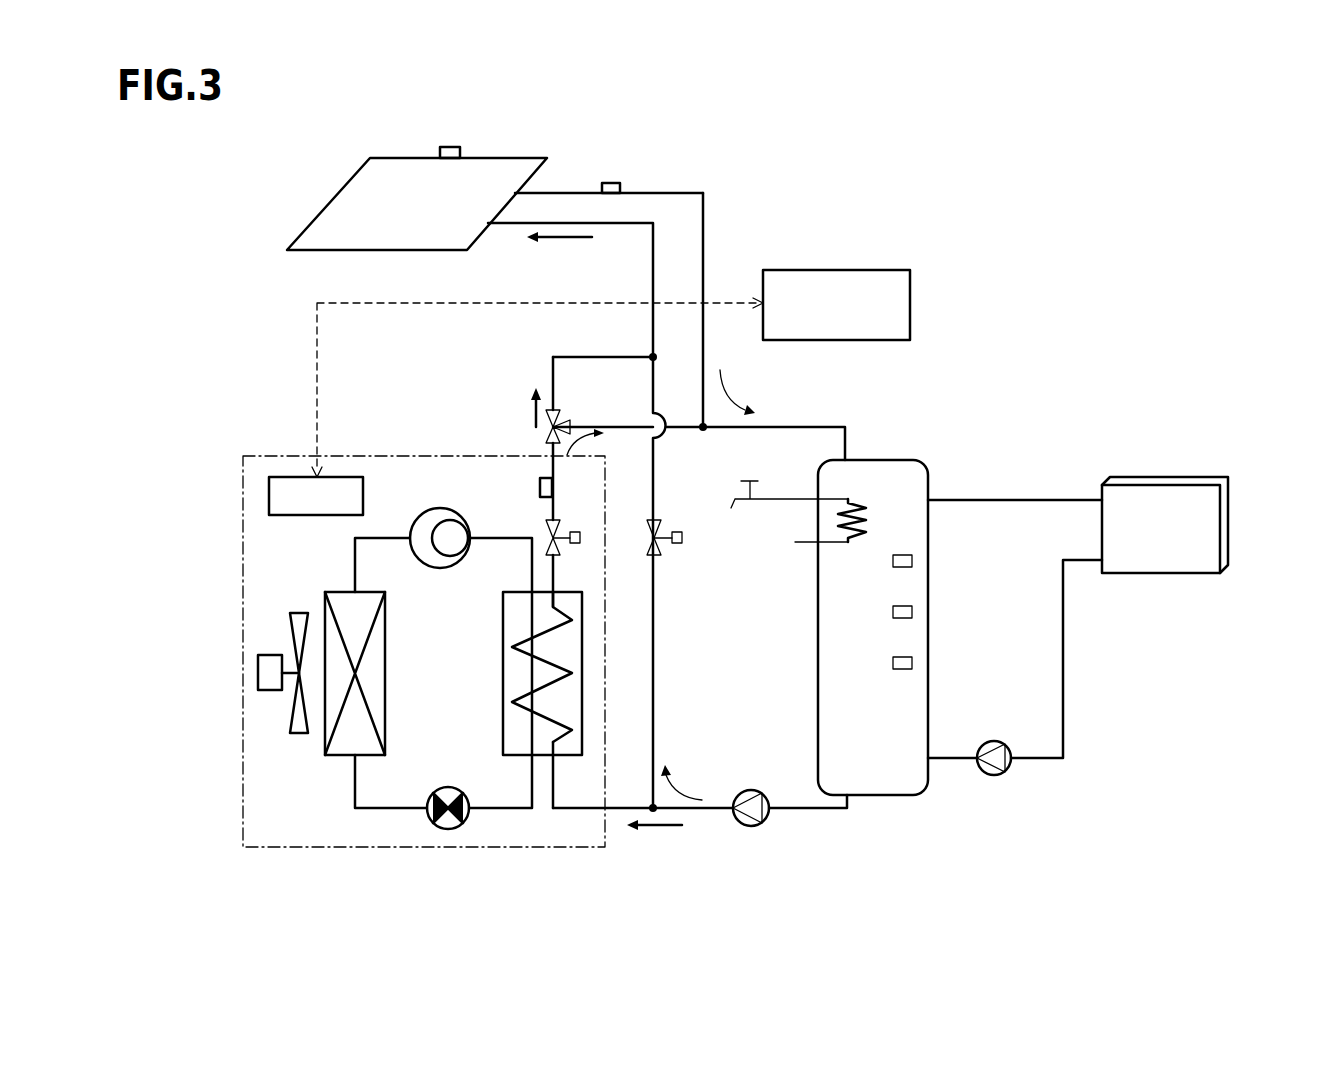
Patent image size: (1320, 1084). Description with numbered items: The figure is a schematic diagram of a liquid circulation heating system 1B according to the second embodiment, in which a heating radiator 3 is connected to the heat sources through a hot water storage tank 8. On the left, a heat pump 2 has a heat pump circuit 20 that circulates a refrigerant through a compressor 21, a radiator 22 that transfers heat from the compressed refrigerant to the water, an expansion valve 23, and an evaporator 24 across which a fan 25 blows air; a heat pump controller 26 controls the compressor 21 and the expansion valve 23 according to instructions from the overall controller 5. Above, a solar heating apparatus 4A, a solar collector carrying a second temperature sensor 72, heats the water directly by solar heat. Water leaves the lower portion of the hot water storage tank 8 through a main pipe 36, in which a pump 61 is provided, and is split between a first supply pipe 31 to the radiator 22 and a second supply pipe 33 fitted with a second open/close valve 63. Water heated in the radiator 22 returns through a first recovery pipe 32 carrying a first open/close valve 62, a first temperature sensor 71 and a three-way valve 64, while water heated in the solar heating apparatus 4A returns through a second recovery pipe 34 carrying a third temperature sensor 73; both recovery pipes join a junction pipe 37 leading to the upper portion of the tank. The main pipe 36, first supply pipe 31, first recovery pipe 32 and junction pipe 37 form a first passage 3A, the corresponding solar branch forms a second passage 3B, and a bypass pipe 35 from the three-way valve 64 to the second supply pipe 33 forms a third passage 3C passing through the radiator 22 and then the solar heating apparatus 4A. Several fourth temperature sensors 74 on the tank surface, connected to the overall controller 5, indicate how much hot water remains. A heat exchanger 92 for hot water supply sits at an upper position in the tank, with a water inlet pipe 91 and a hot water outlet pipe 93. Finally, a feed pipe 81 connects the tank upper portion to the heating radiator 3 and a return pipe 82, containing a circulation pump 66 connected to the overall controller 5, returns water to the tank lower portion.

The liquid circulation heating system 1B is at (1050, 220).
The heat pump 2 is at (240, 557).
The heating radiator 3 is at (1200, 507).
The first passage 3A is at (577, 812).
The second passage 3B is at (674, 190).
The third passage 3C is at (602, 353).
The solar heating apparatus 4A is at (352, 202).
The overall controller 5 is at (865, 283).
The hot water storage tank 8 is at (908, 695).
The heat pump circuit 20 is at (500, 812).
The compressor 21 is at (435, 508).
The radiator 22 is at (502, 655).
The expansion valve 23 is at (450, 832).
The evaporator 24 is at (340, 757).
The fan 25 is at (273, 658).
The heat pump controller 26 is at (285, 477).
The first supply pipe 31 is at (618, 810).
The first recovery pipe 32 is at (682, 430).
The second supply pipe 33 is at (657, 727).
The second recovery pipe 34 is at (703, 222).
The bypass pipe 35 is at (572, 357).
The main pipe 36 is at (813, 810).
The junction pipe 37 is at (812, 427).
The pump 61 is at (752, 827).
The first open/close valve 62 is at (560, 550).
The second open/close valve 63 is at (662, 548).
The three-way valve 64 is at (550, 437).
The circulation pump 66 is at (995, 776).
The first temperature sensor 71 is at (540, 488).
The second temperature sensor 72 is at (450, 147).
The third temperature sensor 73 is at (612, 183).
The fourth temperature sensors 74 is at (912, 561).
The feed pipe 81 is at (1010, 500).
The return pipe 82 is at (1063, 670).
The water inlet pipe 91 is at (807, 543).
The heat exchanger 92 is at (848, 495).
The hot water outlet pipe 93 is at (808, 498).